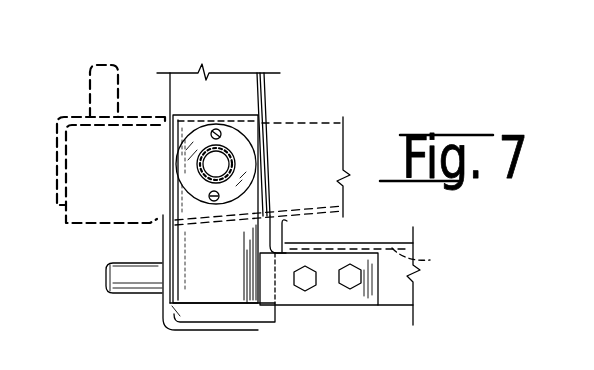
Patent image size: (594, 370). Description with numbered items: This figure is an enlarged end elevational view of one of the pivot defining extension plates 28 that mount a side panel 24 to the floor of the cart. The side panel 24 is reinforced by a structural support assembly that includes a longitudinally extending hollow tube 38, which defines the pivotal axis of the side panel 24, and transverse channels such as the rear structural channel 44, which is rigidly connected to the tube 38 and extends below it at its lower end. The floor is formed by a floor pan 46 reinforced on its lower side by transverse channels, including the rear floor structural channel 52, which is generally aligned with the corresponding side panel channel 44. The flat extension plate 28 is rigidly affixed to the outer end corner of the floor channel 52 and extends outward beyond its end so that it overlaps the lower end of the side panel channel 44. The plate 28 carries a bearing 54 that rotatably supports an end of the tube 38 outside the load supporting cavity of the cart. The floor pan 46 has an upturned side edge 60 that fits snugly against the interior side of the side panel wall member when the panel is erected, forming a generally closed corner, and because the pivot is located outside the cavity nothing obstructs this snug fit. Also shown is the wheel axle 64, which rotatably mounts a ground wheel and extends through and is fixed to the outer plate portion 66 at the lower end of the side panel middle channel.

The side panel 24 is at (272, 143).
The pivot extension plate 28 is at (183, 247).
The tube 38 is at (197, 168).
The rear structural channel 44 is at (174, 94).
The floor pan 46 is at (429, 260).
The rear floor structural channel 52 is at (403, 290).
The bearing 54 is at (238, 122).
The upturned side edge 60 is at (278, 221).
The wheel axle 64 is at (108, 270).
The outer plate portion 66 is at (148, 294).